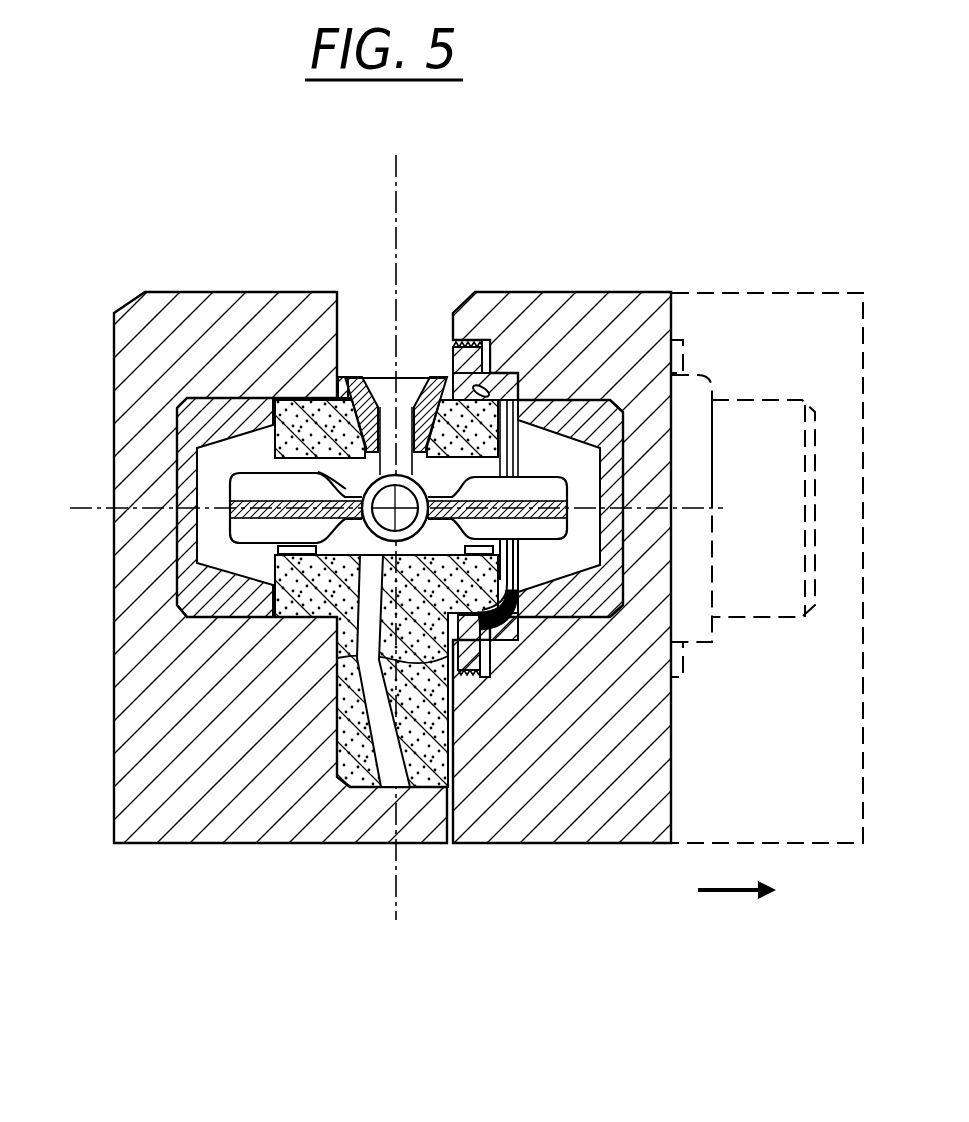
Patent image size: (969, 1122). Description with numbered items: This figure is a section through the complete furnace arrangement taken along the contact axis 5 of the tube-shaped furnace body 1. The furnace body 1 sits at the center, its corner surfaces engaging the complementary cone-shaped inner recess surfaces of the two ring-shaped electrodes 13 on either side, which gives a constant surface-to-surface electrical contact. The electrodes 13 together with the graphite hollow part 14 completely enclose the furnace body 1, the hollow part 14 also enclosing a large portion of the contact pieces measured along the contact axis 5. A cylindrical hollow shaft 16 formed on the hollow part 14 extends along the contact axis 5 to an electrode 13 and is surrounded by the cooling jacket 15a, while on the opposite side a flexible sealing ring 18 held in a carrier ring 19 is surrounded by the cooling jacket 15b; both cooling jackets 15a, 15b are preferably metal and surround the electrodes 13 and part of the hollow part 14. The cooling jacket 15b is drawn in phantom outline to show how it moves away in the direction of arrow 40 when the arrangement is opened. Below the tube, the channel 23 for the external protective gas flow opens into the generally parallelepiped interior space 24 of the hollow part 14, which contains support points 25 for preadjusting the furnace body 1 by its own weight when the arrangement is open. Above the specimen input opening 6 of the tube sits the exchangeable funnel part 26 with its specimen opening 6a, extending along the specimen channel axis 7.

The furnace body 1 is at (224, 538).
The contact axis 5 is at (695, 508).
The specimen input opening 6 is at (410, 440).
The specimen opening 6a is at (386, 443).
The specimen channel axis 7 is at (394, 175).
The ring-shaped electrode 13 is at (200, 583).
The hollow part 14 is at (332, 657).
The cooling jacket 15a is at (149, 843).
The cooling jacket 15b is at (512, 845).
The cylindrical hollow shaft 16 is at (342, 392).
The flexible sealing ring 18 is at (513, 639).
The carrier ring 19 is at (442, 362).
The channel 23 is at (388, 754).
The interior space 24 is at (346, 488).
The support point 25 is at (275, 556).
The funnel part 26 is at (358, 374).
The arrow 40 is at (730, 893).